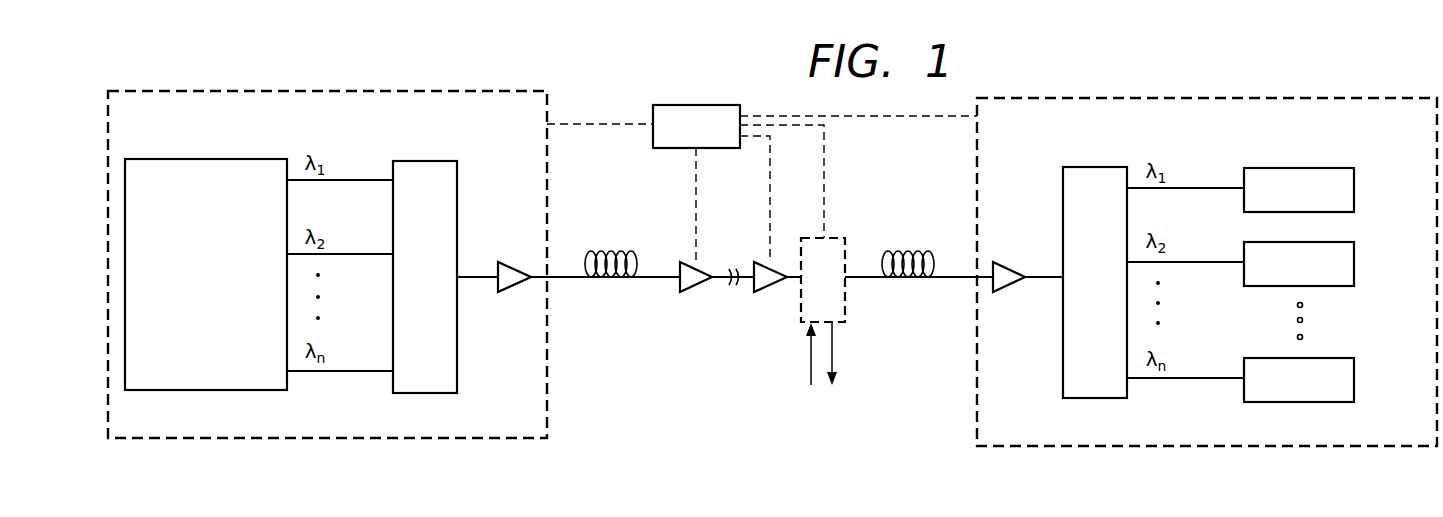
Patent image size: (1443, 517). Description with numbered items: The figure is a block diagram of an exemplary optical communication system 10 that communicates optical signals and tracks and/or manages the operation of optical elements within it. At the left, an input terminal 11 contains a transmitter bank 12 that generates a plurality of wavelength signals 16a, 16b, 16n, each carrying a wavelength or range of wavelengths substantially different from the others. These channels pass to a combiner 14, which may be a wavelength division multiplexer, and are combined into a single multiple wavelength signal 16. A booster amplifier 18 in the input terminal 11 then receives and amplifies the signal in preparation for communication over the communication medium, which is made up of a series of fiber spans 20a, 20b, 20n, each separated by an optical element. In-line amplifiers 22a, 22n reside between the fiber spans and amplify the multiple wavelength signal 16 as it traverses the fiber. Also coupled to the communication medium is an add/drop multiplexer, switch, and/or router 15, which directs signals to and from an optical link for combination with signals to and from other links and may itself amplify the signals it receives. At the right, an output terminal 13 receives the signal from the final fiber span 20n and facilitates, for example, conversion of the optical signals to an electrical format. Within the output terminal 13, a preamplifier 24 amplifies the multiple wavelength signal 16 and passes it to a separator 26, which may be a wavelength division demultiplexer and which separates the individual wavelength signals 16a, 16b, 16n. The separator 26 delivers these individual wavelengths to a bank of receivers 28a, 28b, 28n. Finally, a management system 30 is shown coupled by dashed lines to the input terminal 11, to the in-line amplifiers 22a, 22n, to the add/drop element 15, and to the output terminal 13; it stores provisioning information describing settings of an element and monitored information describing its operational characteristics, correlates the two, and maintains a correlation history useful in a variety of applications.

The optical communication system 10 is at (490, 64).
The input terminal 11 is at (343, 91).
The transmitter bank 12 is at (206, 159).
The output terminal 13 is at (1206, 98).
The combiner 14 is at (430, 161).
The add/drop multiplexer, switch, and/or router 15 is at (845, 299).
The multiple wavelength signal 16 is at (481, 277).
The wavelength signal 16a is at (378, 180).
The wavelength signal 16b is at (378, 254).
The wavelength signal 16n is at (378, 372).
The booster amplifier 18 is at (517, 292).
The fiber span 20a is at (610, 250).
The fiber span 20b is at (732, 267).
The final fiber span 20n is at (921, 252).
The in-line amplifier 22a is at (697, 292).
The in-line amplifier 22n is at (779, 292).
The preamplifier 24 is at (1010, 275).
The separator 26 is at (1100, 167).
The receiver 28a is at (1354, 190).
The receiver 28b is at (1354, 262).
The receiver 28n is at (1354, 380).
The management system 30 is at (693, 105).